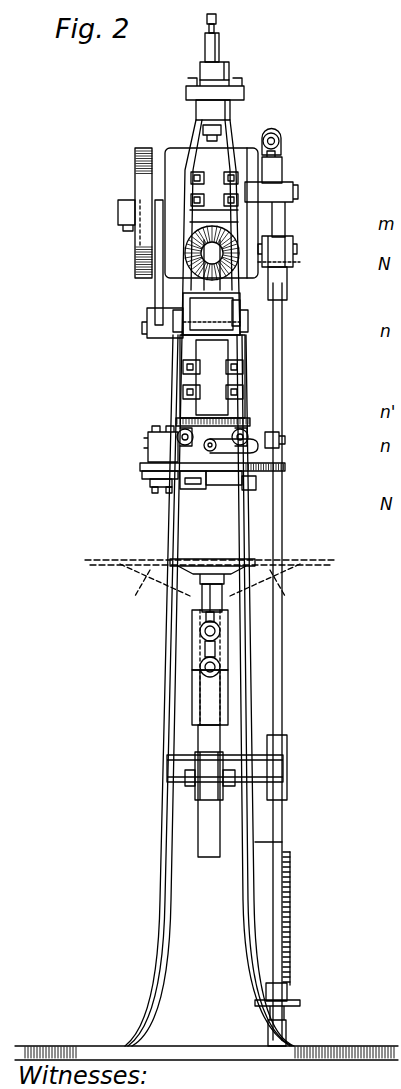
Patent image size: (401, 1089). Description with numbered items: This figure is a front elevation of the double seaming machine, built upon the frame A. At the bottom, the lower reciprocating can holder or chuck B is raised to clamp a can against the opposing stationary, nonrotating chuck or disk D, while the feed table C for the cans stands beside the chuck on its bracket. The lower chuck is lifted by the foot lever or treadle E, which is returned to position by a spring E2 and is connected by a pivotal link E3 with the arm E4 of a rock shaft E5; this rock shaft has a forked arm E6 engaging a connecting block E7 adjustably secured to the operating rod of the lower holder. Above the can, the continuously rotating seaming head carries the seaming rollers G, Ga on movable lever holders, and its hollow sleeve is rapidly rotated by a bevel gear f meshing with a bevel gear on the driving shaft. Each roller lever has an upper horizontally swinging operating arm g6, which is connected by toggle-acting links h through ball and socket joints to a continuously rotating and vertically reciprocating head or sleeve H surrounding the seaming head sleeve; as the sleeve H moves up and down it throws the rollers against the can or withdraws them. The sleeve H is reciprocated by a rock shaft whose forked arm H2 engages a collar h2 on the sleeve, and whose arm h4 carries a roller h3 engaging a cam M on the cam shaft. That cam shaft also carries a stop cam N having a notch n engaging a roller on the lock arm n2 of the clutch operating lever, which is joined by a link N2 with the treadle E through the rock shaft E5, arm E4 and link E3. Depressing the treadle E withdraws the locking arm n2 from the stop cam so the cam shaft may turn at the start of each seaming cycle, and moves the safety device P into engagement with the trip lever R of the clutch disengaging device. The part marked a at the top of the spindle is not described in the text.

The adjusting knob a is at (218, 22).
The cam M is at (140, 148).
The roller h3 is at (122, 232).
The arm h4 is at (156, 282).
The forked arm H2 is at (300, 296).
The collar h2 is at (240, 328).
The bevel gear f is at (190, 222).
The notch n is at (274, 132).
The safety device P is at (282, 146).
The trip lever R is at (284, 162).
The stop cam N is at (284, 214).
The lock arm n2 is at (292, 243).
The seaming roller operating head or sleeve H is at (250, 414).
The toggle-acting link h is at (176, 428).
The operating arm g6 is at (294, 456).
The shaft or pivot portion g is at (142, 474).
The seaming roller G is at (200, 478).
The stationary chuck or disk D is at (214, 480).
The finishing roller Ga is at (258, 480).
The lower reciprocating can holder or chuck B is at (210, 560).
The feed table C is at (88, 562).
The link N2 is at (282, 630).
The arm E4 is at (278, 760).
The rock shaft E5 is at (165, 764).
The forked arm E6 is at (190, 778).
The connecting block E7 is at (196, 795).
The pivotal link E3 is at (280, 822).
The spring E2 is at (288, 882).
The frame A is at (206, 697).
The foot lever or treadle E is at (298, 1002).